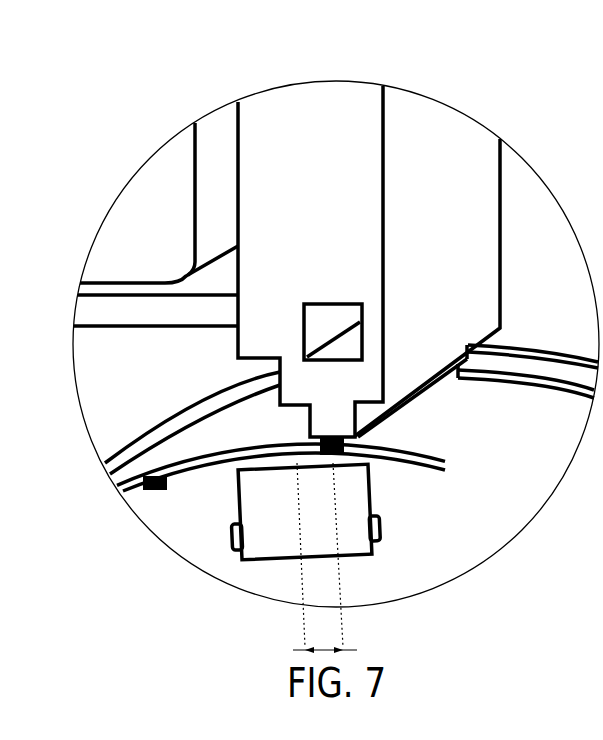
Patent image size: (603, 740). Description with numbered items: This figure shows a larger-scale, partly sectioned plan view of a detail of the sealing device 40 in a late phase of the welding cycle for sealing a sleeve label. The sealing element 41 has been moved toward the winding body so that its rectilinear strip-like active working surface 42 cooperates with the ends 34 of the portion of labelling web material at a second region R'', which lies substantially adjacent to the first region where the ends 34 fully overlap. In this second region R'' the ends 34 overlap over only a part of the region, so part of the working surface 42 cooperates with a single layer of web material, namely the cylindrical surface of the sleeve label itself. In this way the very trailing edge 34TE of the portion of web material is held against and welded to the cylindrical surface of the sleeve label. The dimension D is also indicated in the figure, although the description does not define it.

The sealing device 40 is at (545, 137).
The sealing element 41 is at (350, 383).
The overlapping ends 34 is at (182, 453).
The trailing edge 34TE is at (345, 440).
The working surface 42 is at (298, 463).
The second region R'' is at (401, 509).
The offset distance D is at (325, 558).